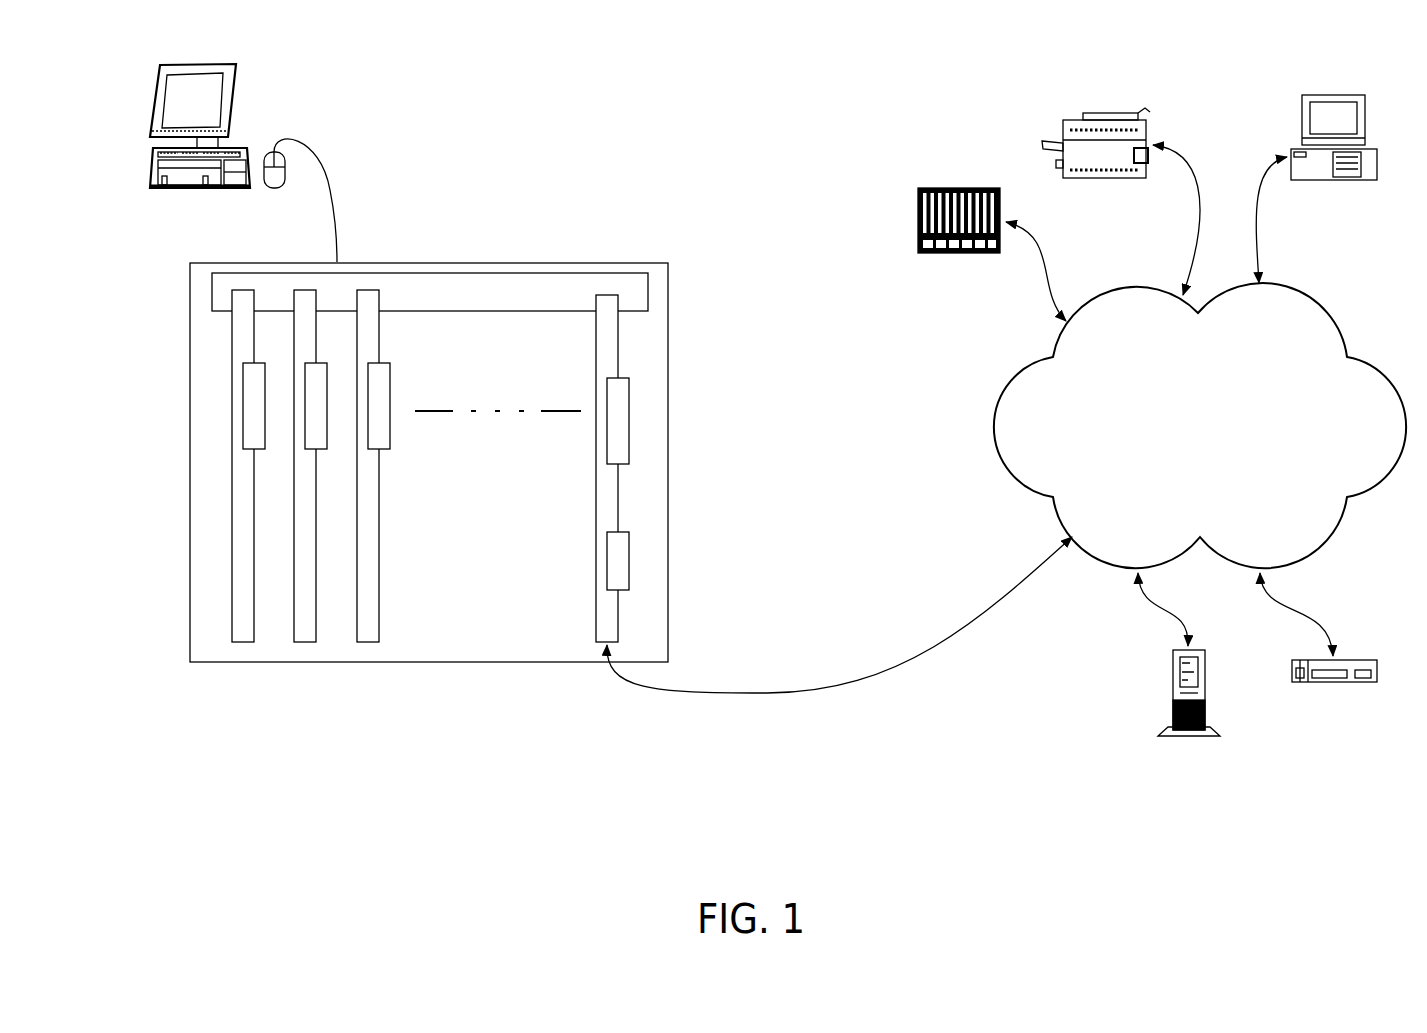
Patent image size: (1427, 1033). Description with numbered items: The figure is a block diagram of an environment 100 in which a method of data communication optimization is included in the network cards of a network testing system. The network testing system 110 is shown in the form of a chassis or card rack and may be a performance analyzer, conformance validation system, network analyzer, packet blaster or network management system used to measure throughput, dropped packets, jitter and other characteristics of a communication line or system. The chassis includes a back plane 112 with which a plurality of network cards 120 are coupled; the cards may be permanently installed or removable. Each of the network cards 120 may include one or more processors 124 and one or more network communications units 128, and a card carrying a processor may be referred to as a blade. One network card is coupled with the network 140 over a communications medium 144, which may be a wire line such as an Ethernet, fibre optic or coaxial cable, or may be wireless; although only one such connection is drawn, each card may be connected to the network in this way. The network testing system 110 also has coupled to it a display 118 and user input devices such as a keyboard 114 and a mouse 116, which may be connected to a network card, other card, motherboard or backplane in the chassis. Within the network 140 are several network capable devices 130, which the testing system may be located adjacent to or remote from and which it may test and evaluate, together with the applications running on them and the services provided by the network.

The environment 100 is at (790, 108).
The network testing system 110 is at (378, 262).
The back plane 112 is at (431, 292).
The keyboard 114 is at (152, 167).
The mouse 116 is at (273, 188).
The display 118 is at (160, 107).
The network cards 120 is at (212, 618).
The processor 124 is at (629, 420).
The network communications unit 128 is at (629, 560).
The network capable devices 130 is at (1147, 449).
The network 140 is at (1200, 425).
The communications medium 144 is at (768, 693).